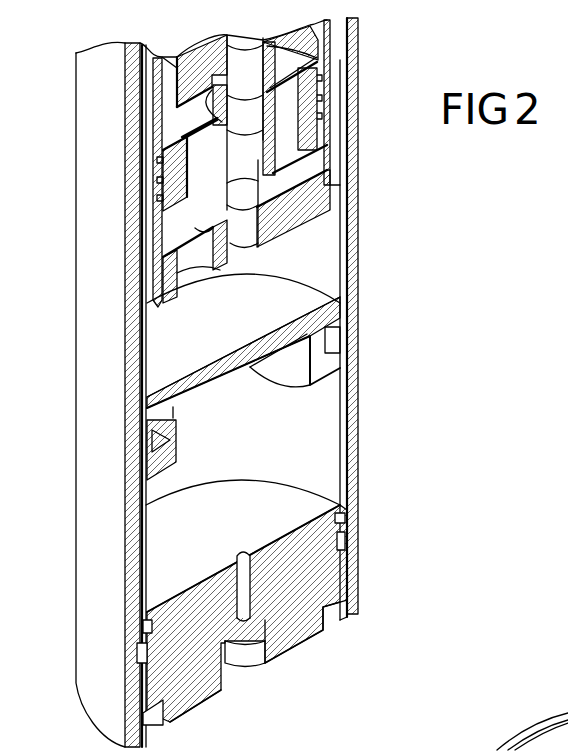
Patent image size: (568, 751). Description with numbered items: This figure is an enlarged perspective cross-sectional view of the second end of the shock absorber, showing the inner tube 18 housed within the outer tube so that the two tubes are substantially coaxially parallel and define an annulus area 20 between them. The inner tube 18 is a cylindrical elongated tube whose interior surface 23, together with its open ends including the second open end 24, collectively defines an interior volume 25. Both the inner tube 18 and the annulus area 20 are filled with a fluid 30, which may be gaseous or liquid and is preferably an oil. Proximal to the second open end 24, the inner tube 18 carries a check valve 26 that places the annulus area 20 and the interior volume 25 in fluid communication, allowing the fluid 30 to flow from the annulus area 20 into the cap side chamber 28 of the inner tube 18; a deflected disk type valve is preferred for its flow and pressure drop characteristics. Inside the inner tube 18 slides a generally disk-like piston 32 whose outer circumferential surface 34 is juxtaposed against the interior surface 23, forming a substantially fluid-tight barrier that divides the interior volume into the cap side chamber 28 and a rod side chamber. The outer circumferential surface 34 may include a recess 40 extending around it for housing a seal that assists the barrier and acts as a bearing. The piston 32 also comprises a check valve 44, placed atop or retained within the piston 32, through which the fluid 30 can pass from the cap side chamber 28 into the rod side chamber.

The inner tube 18 is at (325, 136).
The annulus area 20 is at (193, 296).
The interior surface 23 is at (310, 46).
The second open end 24 is at (160, 221).
The interior volume 25 is at (316, 159).
The check valve 26 is at (177, 237).
The cap side chamber 28 is at (282, 247).
The fluid 30 is at (258, 262).
The piston 32 is at (178, 184).
The outer circumferential surface 34 is at (163, 156).
The recess 40 is at (163, 171).
The check valve 44 is at (178, 123).